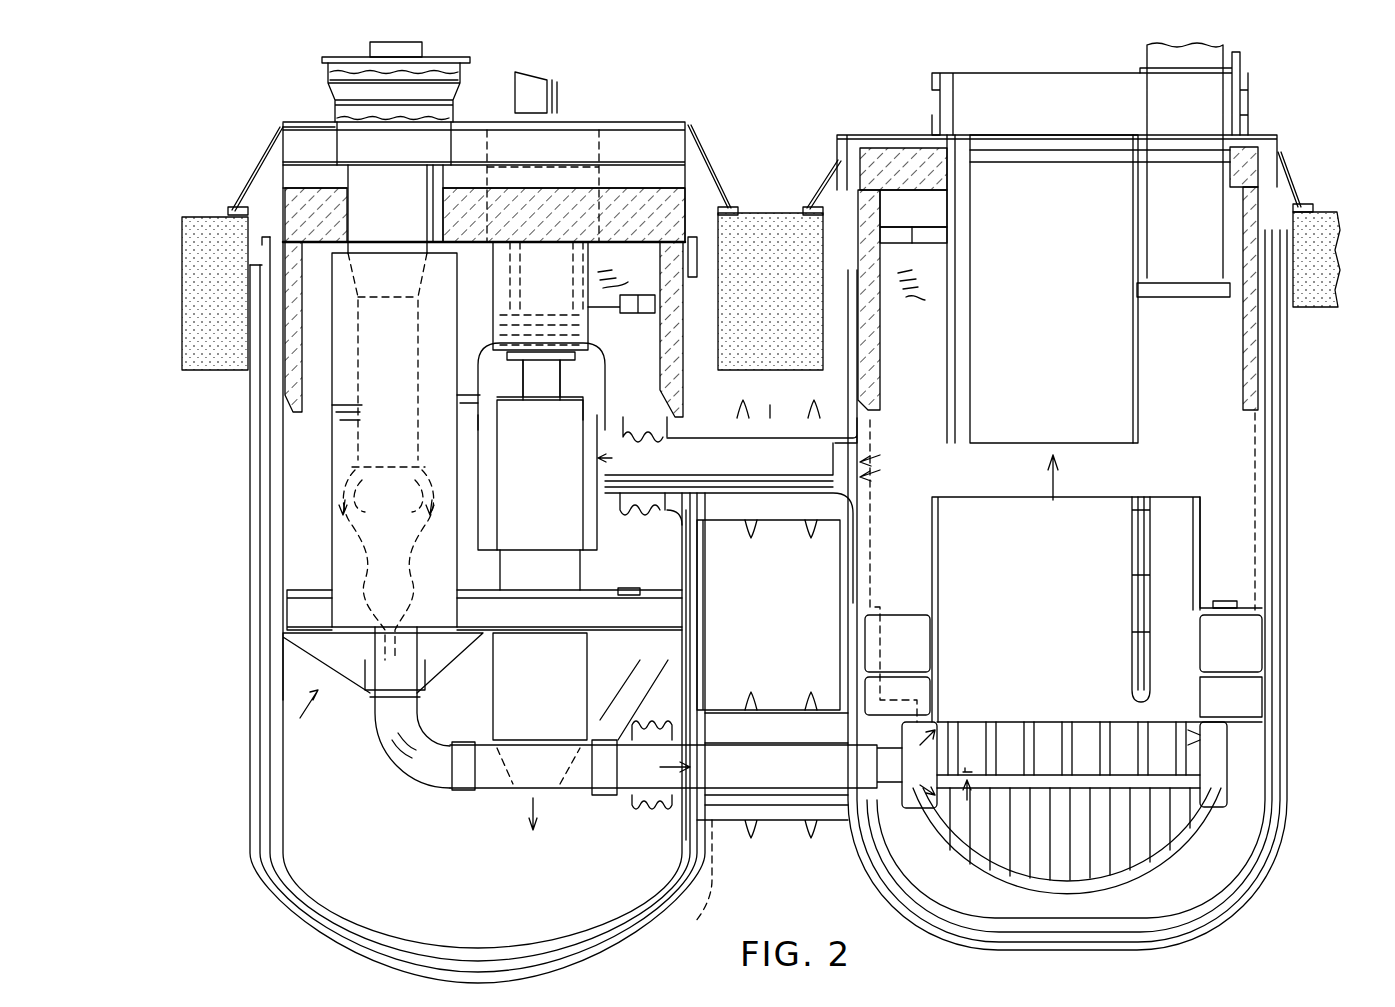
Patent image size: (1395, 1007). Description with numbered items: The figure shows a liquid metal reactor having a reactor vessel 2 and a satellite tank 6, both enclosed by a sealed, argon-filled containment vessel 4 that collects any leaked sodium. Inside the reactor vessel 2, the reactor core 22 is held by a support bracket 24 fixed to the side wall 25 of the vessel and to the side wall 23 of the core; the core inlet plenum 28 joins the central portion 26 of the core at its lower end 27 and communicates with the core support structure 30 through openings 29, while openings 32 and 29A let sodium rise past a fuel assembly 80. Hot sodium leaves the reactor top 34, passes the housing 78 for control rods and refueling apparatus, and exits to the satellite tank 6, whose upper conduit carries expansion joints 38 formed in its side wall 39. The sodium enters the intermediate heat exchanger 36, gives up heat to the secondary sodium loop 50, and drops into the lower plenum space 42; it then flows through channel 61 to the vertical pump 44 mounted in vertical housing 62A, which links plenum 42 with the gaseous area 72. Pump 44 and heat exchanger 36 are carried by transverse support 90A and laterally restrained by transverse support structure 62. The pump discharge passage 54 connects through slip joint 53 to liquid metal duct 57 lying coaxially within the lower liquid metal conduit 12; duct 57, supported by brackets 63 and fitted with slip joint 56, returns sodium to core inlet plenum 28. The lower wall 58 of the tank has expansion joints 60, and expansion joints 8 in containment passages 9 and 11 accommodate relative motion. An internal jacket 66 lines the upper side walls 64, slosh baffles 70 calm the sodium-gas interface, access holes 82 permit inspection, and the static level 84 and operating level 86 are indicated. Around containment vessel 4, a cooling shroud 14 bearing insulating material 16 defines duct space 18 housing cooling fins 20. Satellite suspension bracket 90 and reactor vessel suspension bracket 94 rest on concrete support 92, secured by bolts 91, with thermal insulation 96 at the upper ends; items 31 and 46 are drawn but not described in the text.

The reactor vessel 2 is at (1236, 872).
The containment vessel 4 is at (1192, 914).
The satellite tank 6 is at (355, 918).
The expansion joints 8 is at (772, 625).
The containment passage 9 is at (770, 400).
The containment passage 11 is at (778, 877).
The lower liquid metal conduit 12 is at (830, 722).
The cooling shroud 14 is at (709, 893).
The layer of insulating material 16 is at (693, 915).
The duct space 18 is at (272, 905).
The cooling fins 20 is at (257, 437).
The reactor core 22 is at (1204, 702).
The side wall of the reactor core 23 is at (938, 642).
The support bracket 24 is at (897, 613).
The side wall of the reactor vessel 25 is at (866, 626).
The central portion of the reactor core 26 is at (1061, 638).
The lower end 27 is at (1022, 722).
The core inlet plenum 28 is at (914, 778).
The openings 29 is at (1229, 812).
The opening 29A is at (944, 738).
The core support structure 30 is at (1092, 865).
The liquid level 31 is at (337, 505).
The openings 32 is at (967, 772).
The reactor top 34 is at (993, 499).
The intermediate heat exchanger 36 is at (603, 388).
The expansion joints 38 is at (657, 432).
The side wall of satellite tank 39 is at (685, 526).
The lower plenum space 42 is at (420, 893).
The vertical pump 44 is at (438, 385).
The pump motor 46 is at (455, 70).
The secondary sodium loop 50 is at (558, 100).
The slip joint 53 is at (378, 713).
The discharge passage 54 is at (345, 555).
The slip joint 56 is at (467, 795).
The liquid metal duct 57 is at (775, 735).
The lower wall of satellite tank 58 is at (688, 745).
The expansion joints 60 is at (652, 725).
The channel 61 is at (343, 662).
The transverse support structure 62 is at (292, 582).
The vertical housing 62A is at (345, 452).
The support brackets 63 is at (328, 650).
The upper side walls 64 is at (1268, 472).
The internal jacket 66 is at (872, 535).
The slosh baffles 70 is at (640, 316).
The gaseous area 72 is at (498, 298).
The housing 78 is at (1115, 392).
The fuel assembly 80 is at (1152, 570).
The inspection and fabrication assembly access holes 82 is at (632, 588).
The static level 84 is at (936, 322).
The satellite tank operating level 86 is at (440, 300).
The satellite suspension bracket 90 is at (263, 175).
The transverse support 90A is at (300, 135).
The bolts 91 is at (230, 208).
The concrete support 92 is at (205, 360).
The reactor vessel suspension bracket 94 is at (827, 177).
The thermal insulation 96 is at (251, 472).